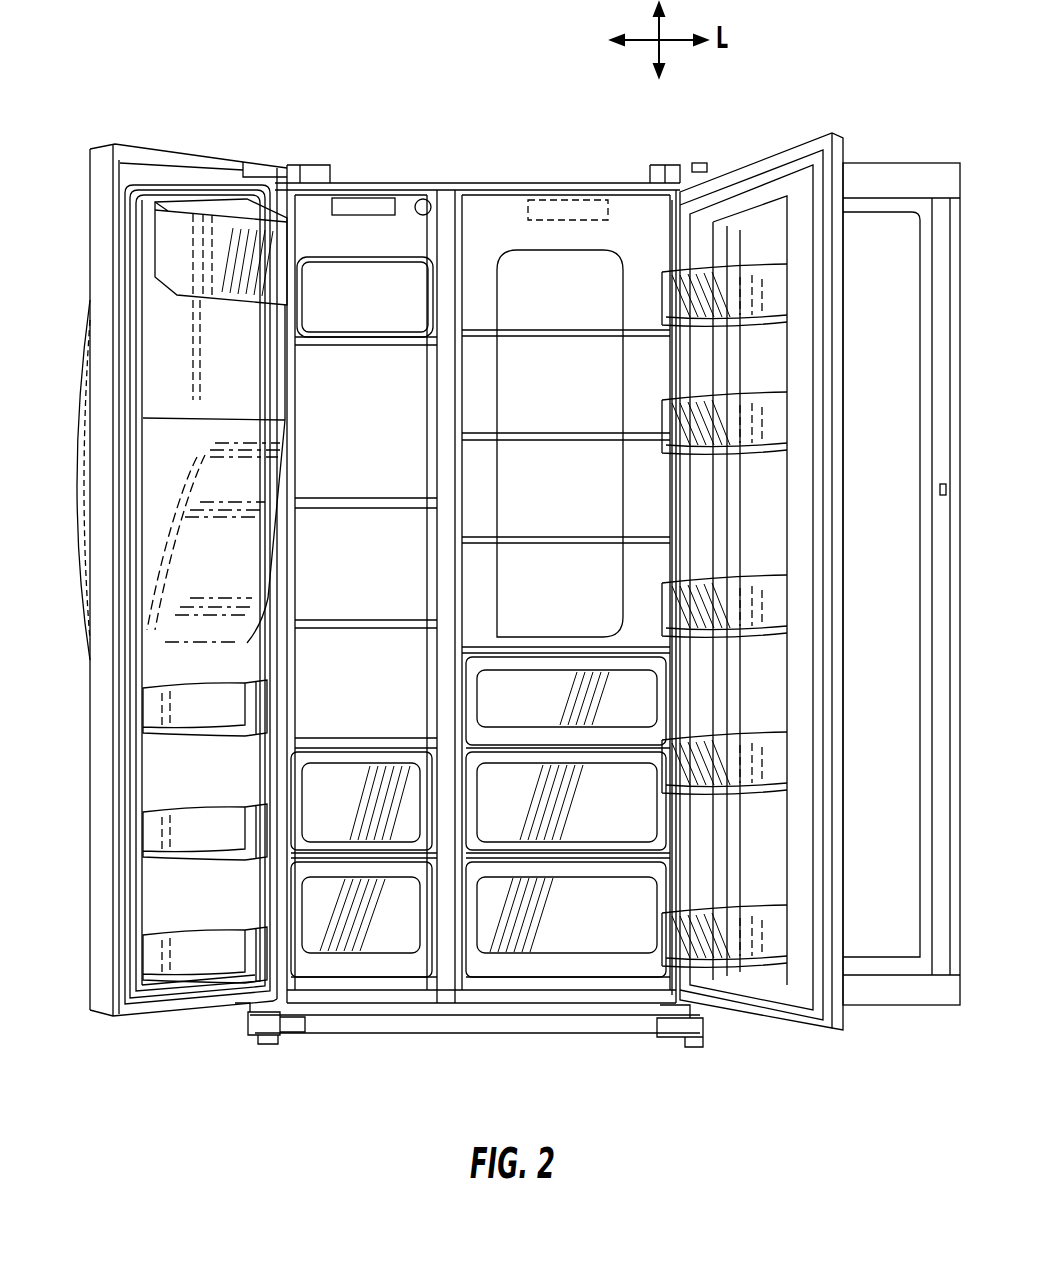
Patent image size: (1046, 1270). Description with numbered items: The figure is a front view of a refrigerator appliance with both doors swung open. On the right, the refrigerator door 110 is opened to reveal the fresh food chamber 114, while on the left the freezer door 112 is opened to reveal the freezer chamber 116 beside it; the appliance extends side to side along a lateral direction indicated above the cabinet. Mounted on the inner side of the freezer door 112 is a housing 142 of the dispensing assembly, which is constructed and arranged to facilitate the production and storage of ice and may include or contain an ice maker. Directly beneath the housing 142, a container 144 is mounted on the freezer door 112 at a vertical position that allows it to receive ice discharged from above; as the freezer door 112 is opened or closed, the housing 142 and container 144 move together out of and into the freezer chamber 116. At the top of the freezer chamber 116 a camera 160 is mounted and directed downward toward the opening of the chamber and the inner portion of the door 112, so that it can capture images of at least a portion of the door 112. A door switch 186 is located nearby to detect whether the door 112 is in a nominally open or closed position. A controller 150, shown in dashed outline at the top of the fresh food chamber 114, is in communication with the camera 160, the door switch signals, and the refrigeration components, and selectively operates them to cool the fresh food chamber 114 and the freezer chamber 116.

The refrigerator door 110 is at (943, 258).
The freezer door 112 is at (88, 182).
The fresh food chamber 114 is at (555, 936).
The freezer chamber 116 is at (378, 936).
The housing 142 is at (233, 232).
The container 144 is at (262, 396).
The controller 150 is at (567, 200).
The camera 160 is at (368, 196).
The door switch 186 is at (427, 199).